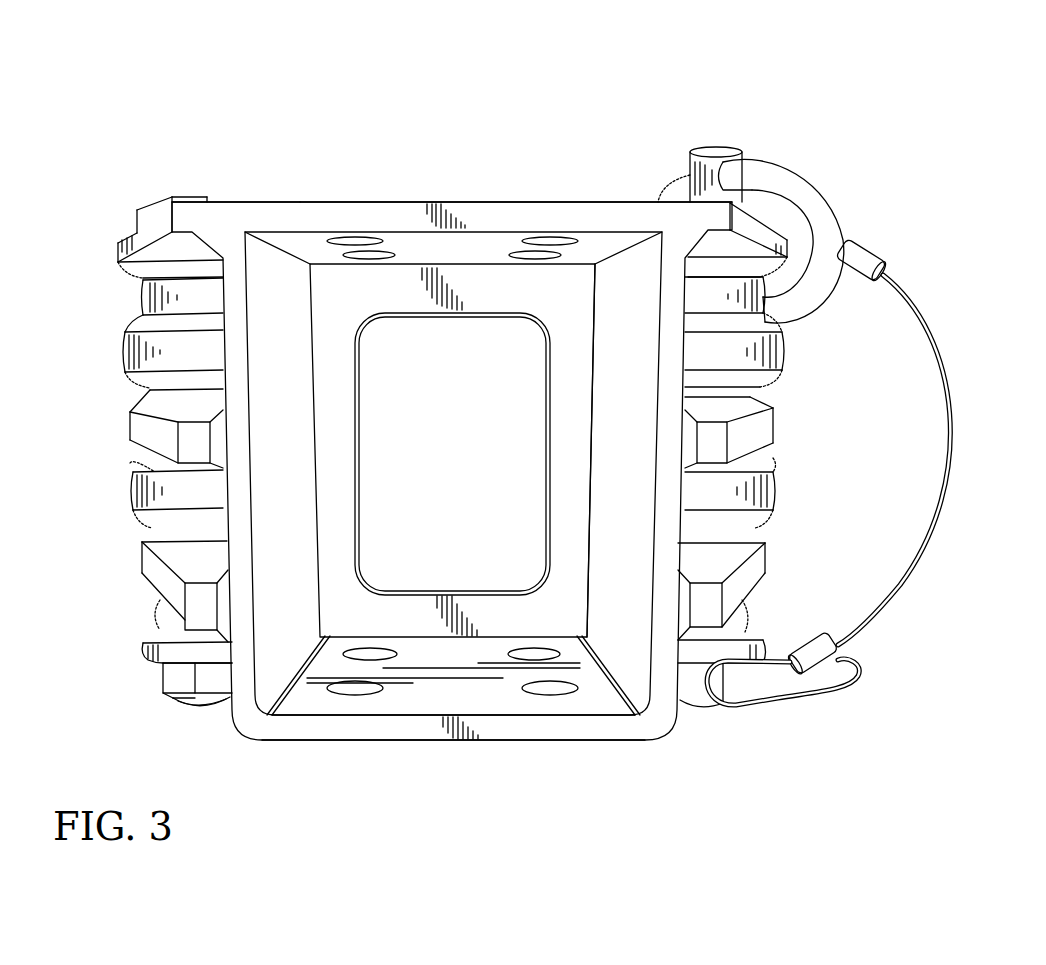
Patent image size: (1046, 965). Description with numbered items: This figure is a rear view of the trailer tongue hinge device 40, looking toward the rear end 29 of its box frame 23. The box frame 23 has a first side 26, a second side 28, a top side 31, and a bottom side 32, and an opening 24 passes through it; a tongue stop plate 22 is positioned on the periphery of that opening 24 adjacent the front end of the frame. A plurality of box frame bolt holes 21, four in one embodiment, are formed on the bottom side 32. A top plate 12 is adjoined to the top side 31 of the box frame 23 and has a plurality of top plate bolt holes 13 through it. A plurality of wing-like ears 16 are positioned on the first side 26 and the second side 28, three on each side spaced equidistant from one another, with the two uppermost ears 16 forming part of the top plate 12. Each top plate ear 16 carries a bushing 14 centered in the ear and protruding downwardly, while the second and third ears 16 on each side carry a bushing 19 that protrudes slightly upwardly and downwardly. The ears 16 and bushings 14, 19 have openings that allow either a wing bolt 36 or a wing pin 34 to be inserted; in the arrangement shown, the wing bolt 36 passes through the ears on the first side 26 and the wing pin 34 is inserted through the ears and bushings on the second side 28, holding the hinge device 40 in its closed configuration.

The trailer tongue hinge device 40 is at (166, 78).
The top plate 12 is at (420, 215).
The top plate bolt holes 13 is at (367, 253).
The bushing 14 is at (153, 297).
The wing-like ears 16 is at (130, 238).
The bushing 19 is at (143, 393).
The box frame bolt holes 21 is at (370, 652).
The tongue stop plate 22 is at (577, 613).
The box frame 23 is at (550, 707).
The opening 24 is at (440, 578).
The first side 26 is at (153, 568).
The second side 28 is at (765, 560).
The rear end 29 is at (503, 202).
The top side 31 is at (263, 203).
The bottom side 32 is at (393, 740).
The wing pin 34 is at (783, 180).
The wing bolt 36 is at (153, 207).